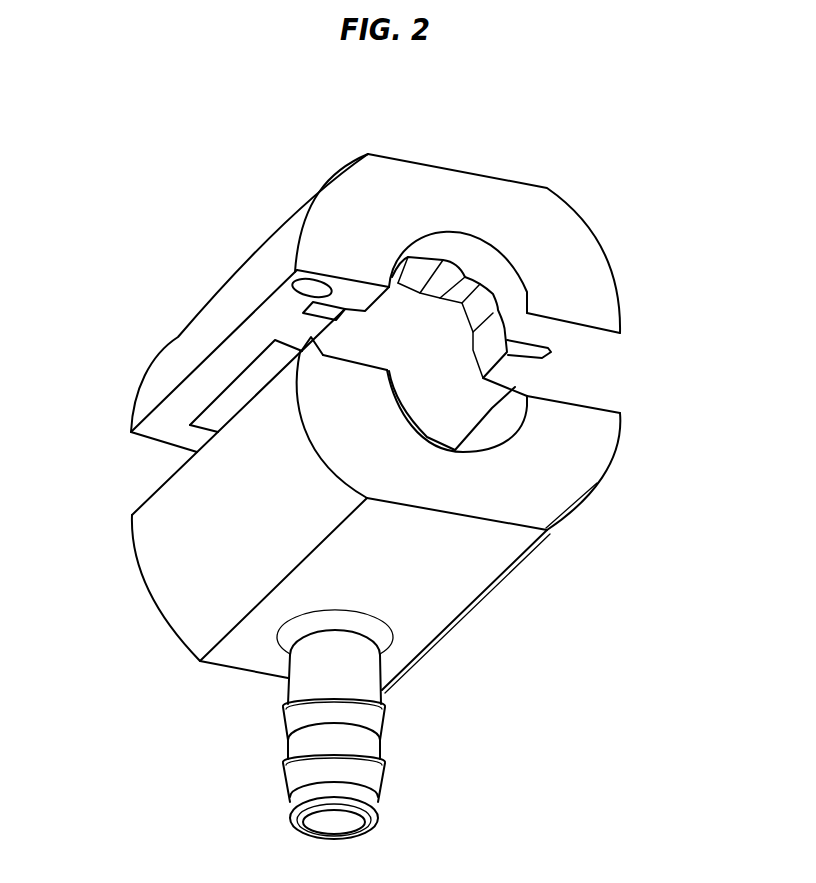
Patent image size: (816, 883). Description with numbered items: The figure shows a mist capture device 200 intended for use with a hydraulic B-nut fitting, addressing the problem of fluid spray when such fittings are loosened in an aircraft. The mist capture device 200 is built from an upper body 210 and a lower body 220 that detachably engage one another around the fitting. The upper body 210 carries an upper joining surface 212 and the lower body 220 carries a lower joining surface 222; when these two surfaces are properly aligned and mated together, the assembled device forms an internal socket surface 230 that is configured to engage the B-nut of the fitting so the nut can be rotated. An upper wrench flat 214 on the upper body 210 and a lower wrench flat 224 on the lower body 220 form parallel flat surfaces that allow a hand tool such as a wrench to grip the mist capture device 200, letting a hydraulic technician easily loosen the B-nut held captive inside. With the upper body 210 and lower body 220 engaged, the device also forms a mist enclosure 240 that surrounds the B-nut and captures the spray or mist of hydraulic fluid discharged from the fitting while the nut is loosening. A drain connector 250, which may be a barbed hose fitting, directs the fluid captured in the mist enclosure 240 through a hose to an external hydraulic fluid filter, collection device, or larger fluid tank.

The mist capture device 200 is at (148, 129).
The upper body 210 is at (622, 236).
The upper joining surface 212 is at (583, 346).
The upper wrench flat 214 is at (505, 178).
The lower body 220 is at (660, 533).
The lower joining surface 222 is at (603, 412).
The lower wrench flat 224 is at (460, 593).
The internal socket surface 230 is at (460, 293).
The mist enclosure 240 is at (402, 323).
The drain connector 250 is at (372, 773).